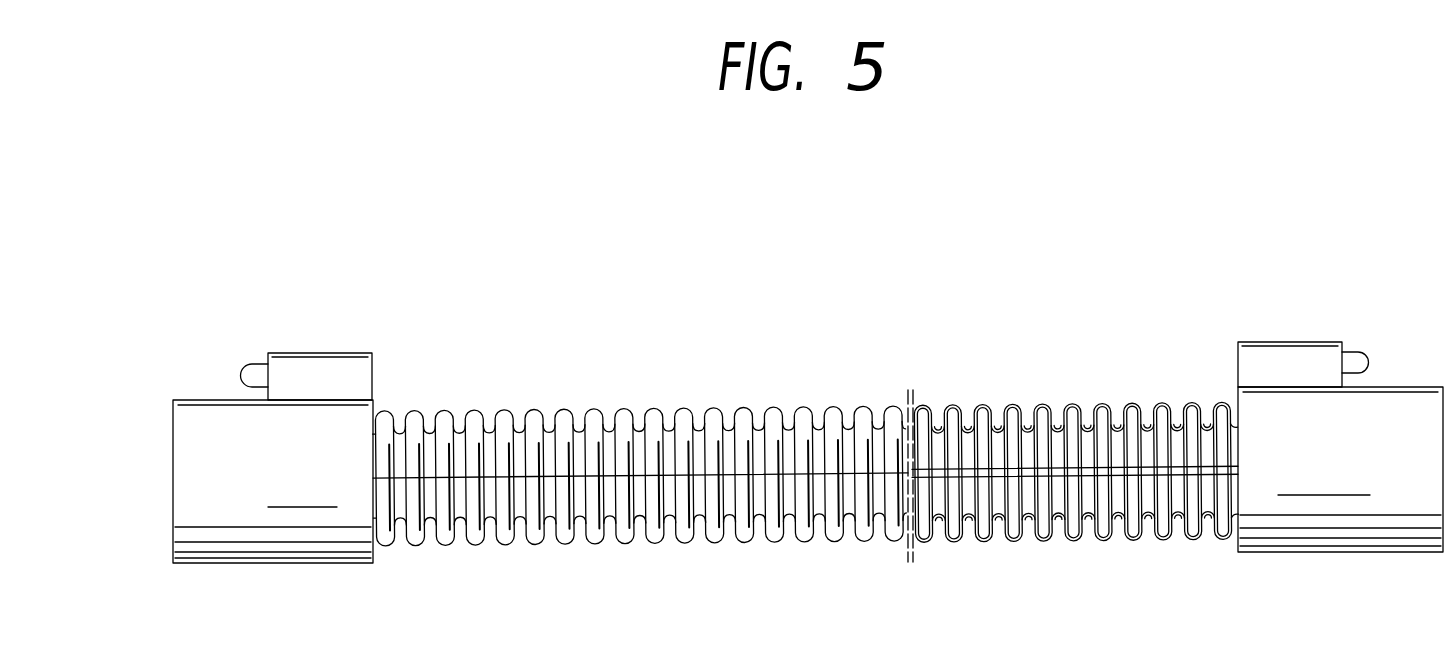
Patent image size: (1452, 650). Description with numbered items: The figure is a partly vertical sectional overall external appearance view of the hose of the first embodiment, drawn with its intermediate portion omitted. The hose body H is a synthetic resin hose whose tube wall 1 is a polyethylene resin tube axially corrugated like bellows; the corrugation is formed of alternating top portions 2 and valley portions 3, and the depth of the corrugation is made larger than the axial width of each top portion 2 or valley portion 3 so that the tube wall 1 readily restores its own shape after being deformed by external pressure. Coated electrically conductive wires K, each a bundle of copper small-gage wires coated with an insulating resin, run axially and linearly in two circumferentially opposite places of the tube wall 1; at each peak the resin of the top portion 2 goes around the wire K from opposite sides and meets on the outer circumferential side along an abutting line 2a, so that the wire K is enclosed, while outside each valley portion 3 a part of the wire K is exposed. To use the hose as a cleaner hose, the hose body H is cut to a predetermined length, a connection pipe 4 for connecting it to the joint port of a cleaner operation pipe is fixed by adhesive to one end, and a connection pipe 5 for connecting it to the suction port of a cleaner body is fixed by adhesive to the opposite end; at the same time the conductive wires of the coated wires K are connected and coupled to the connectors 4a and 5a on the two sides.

The tube wall 1 is at (878, 306).
The top portion 2 is at (745, 410).
The abutting line 2a is at (658, 475).
The valley portion 3 is at (875, 410).
The connection pipe 4 is at (207, 425).
The connector 4a is at (317, 368).
The connection pipe 5 is at (1405, 410).
The connector 5a is at (1290, 352).
The hose body H is at (490, 380).
The coated electrically conductive wire K is at (583, 473).